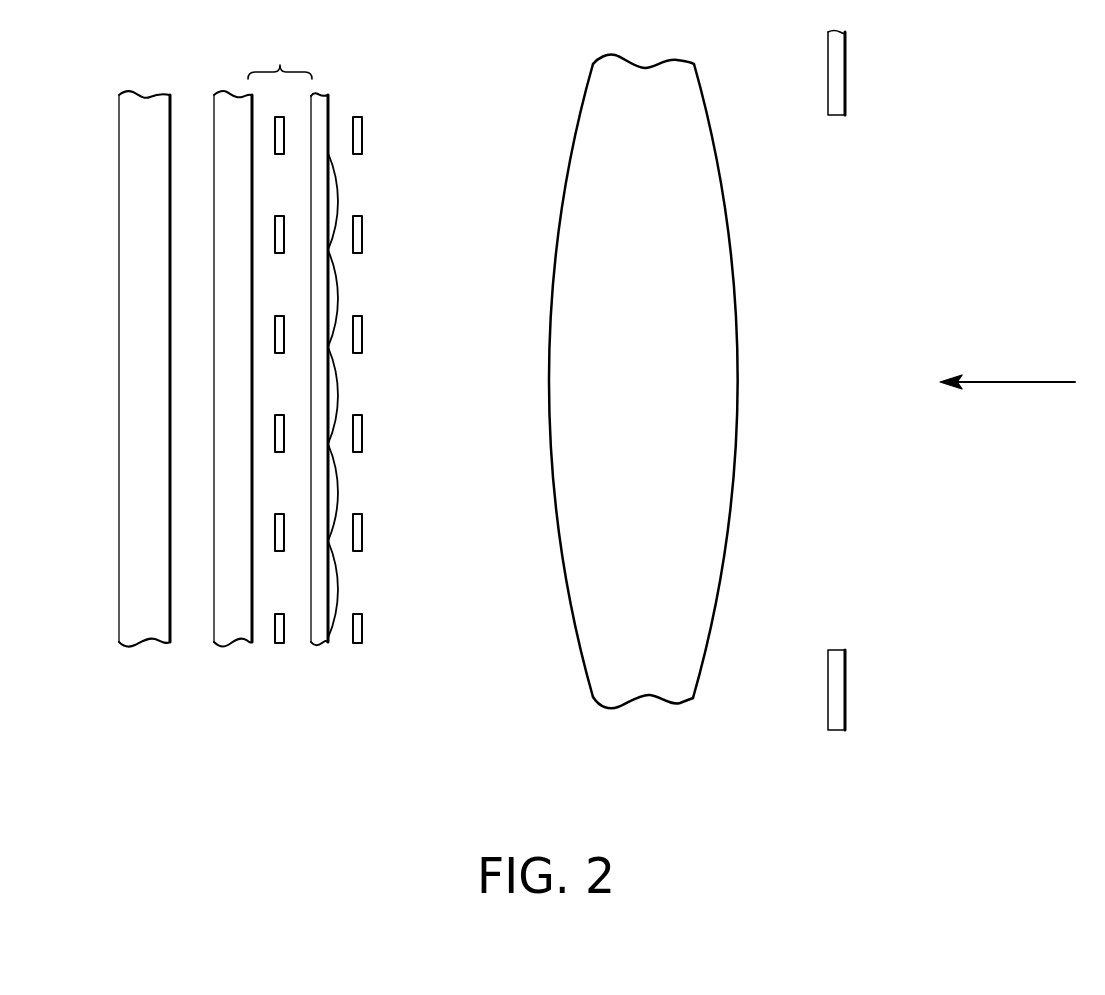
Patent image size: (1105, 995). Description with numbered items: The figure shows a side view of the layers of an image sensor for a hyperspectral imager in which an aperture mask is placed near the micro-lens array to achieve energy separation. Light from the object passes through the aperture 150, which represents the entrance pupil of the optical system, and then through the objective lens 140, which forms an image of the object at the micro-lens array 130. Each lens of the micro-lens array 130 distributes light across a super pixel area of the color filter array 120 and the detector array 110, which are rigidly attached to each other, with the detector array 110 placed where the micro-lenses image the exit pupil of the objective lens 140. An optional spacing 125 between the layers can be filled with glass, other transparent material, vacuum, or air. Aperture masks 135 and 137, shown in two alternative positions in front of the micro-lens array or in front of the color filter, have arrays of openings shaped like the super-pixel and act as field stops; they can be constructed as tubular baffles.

The detector array 110 is at (132, 643).
The color filter array 120 is at (227, 643).
The optional spacing 125 is at (280, 57).
The micro-lens array 130 is at (308, 645).
The aperture mask 135 is at (281, 643).
The aperture mask 137 is at (365, 620).
The objective lens 140 is at (657, 698).
The aperture 150 is at (837, 115).